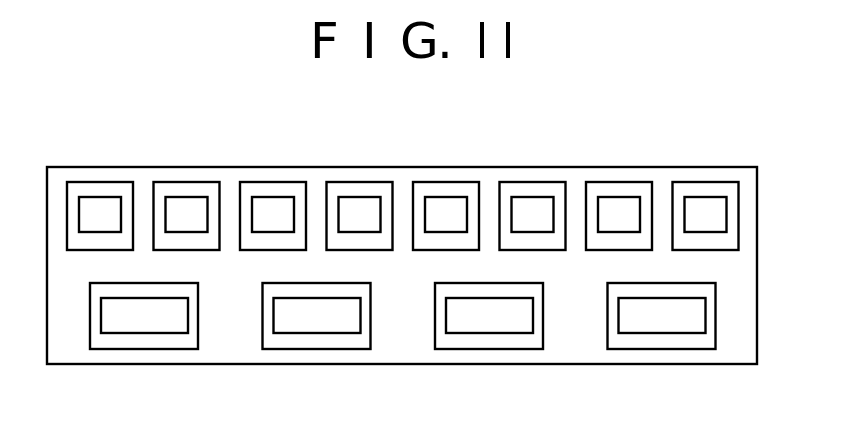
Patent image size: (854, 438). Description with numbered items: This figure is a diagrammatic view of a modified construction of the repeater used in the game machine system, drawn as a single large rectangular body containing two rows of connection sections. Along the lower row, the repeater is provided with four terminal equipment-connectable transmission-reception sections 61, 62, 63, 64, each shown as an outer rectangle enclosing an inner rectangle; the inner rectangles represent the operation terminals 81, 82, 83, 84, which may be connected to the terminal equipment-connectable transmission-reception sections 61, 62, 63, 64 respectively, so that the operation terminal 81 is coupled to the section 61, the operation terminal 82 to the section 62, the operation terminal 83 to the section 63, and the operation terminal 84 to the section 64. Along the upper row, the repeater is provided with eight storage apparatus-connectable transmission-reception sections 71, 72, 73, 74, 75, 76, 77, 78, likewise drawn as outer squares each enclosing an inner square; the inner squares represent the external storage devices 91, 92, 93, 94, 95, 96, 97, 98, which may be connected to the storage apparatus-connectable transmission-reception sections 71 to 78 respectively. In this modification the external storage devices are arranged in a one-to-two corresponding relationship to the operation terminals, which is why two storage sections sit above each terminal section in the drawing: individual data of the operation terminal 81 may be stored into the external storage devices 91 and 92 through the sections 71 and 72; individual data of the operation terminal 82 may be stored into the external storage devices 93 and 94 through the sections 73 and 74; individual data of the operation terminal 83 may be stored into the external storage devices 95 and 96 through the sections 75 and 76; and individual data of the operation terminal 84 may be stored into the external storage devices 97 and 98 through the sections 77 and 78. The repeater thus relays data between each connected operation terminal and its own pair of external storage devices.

The terminal equipment-connectable transmission-reception section 61 is at (112, 343).
The terminal equipment-connectable transmission-reception section 62 is at (285, 343).
The terminal equipment-connectable transmission-reception section 63 is at (453, 343).
The terminal equipment-connectable transmission-reception section 64 is at (628, 343).
The storage apparatus-connectable transmission-reception section 71 is at (89, 186).
The storage apparatus-connectable transmission-reception section 72 is at (171, 186).
The storage apparatus-connectable transmission-reception section 73 is at (256, 186).
The storage apparatus-connectable transmission-reception section 74 is at (344, 186).
The storage apparatus-connectable transmission-reception section 75 is at (429, 186).
The storage apparatus-connectable transmission-reception section 76 is at (514, 186).
The storage apparatus-connectable transmission-reception section 77 is at (600, 186).
The storage apparatus-connectable transmission-reception section 78 is at (684, 186).
The operation terminal 81 is at (172, 325).
The operation terminal 82 is at (348, 325).
The operation terminal 83 is at (520, 325).
The operation terminal 84 is at (688, 325).
The external storage device 91 is at (108, 206).
The external storage device 92 is at (194, 206).
The external storage device 93 is at (280, 206).
The external storage device 94 is at (367, 206).
The external storage device 95 is at (451, 206).
The external storage device 96 is at (538, 206).
The external storage device 97 is at (620, 206).
The external storage device 98 is at (709, 206).